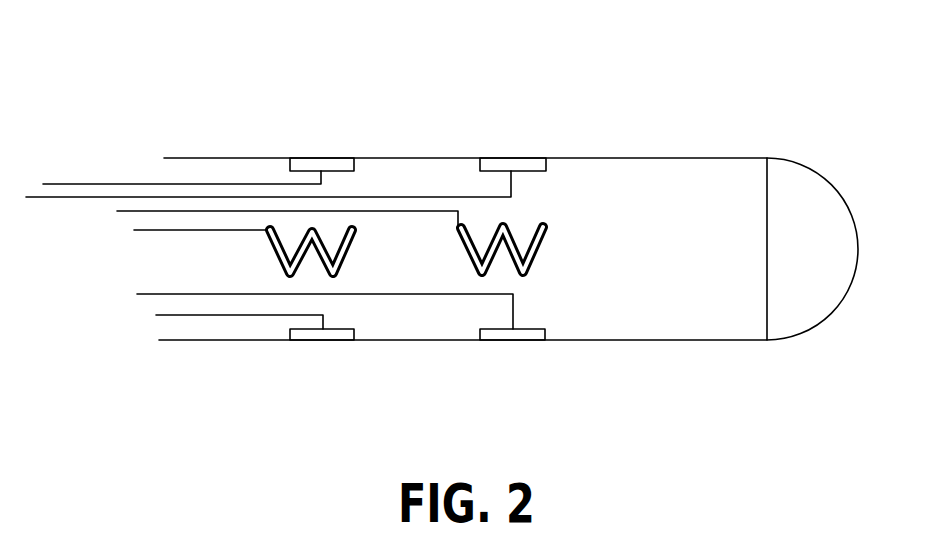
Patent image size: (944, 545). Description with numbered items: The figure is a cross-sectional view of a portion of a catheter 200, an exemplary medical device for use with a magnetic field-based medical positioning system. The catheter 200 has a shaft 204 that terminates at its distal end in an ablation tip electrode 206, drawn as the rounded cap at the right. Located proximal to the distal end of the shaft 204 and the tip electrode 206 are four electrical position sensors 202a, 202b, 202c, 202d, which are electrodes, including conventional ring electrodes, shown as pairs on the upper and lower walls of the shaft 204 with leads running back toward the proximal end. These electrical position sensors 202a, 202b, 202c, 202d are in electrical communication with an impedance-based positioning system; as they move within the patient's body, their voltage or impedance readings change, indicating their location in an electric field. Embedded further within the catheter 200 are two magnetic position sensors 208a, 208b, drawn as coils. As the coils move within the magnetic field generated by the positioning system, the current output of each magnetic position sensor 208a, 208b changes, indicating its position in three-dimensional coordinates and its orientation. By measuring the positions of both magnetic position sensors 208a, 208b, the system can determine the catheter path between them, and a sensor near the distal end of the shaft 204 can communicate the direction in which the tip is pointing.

The catheter 200 is at (292, 96).
The electrical position sensor 202a is at (303, 158).
The electrical position sensor 202b is at (495, 158).
The electrical position sensor 202c is at (303, 340).
The electrical position sensor 202d is at (495, 340).
The shaft 204 is at (643, 327).
The ablation tip electrode 206 is at (828, 210).
The magnetic position sensor 208a is at (355, 240).
The magnetic position sensor 208b is at (546, 238).